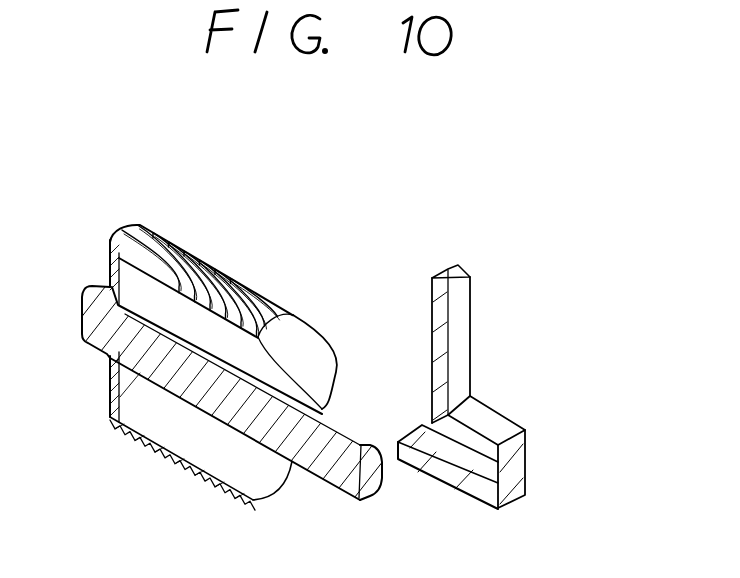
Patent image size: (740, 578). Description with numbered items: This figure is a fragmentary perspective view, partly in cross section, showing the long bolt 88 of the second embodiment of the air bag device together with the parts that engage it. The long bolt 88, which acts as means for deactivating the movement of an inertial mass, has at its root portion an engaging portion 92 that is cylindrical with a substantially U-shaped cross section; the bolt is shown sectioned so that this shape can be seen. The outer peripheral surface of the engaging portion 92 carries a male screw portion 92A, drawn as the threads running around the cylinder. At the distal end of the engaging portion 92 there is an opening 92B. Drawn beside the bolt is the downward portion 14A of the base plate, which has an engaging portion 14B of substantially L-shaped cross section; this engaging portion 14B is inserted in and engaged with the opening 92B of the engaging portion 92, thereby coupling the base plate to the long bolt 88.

The engaging portion 92 is at (201, 367).
The male screw portion 92A is at (197, 247).
The opening 92B is at (305, 357).
The long bolt 88 is at (72, 345).
The downward portion 14A is at (472, 318).
The engaging portion 14B is at (418, 435).